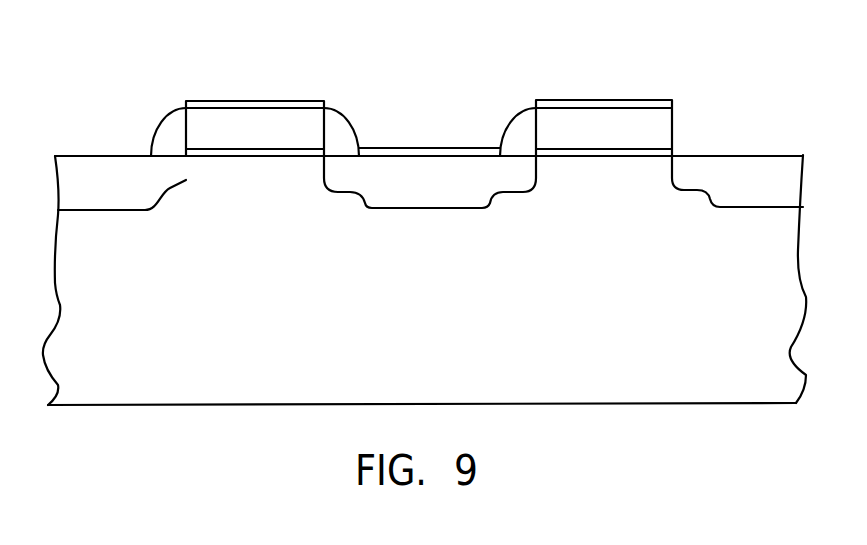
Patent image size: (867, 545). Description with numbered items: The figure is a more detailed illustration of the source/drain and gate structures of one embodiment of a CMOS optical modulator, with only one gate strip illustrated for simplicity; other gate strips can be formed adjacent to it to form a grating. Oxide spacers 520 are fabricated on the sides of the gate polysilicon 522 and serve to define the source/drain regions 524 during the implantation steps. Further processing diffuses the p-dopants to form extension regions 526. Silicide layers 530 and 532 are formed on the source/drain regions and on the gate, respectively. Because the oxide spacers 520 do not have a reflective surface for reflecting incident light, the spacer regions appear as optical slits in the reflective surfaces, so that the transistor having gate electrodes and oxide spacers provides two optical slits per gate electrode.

The oxide spacers 520 is at (347, 123).
The gate polysilicon 522 is at (280, 141).
The source/drain regions 524 is at (450, 197).
The extension regions 526 is at (173, 178).
The silicide layer 530 is at (450, 148).
The silicide layer 532 is at (270, 101).